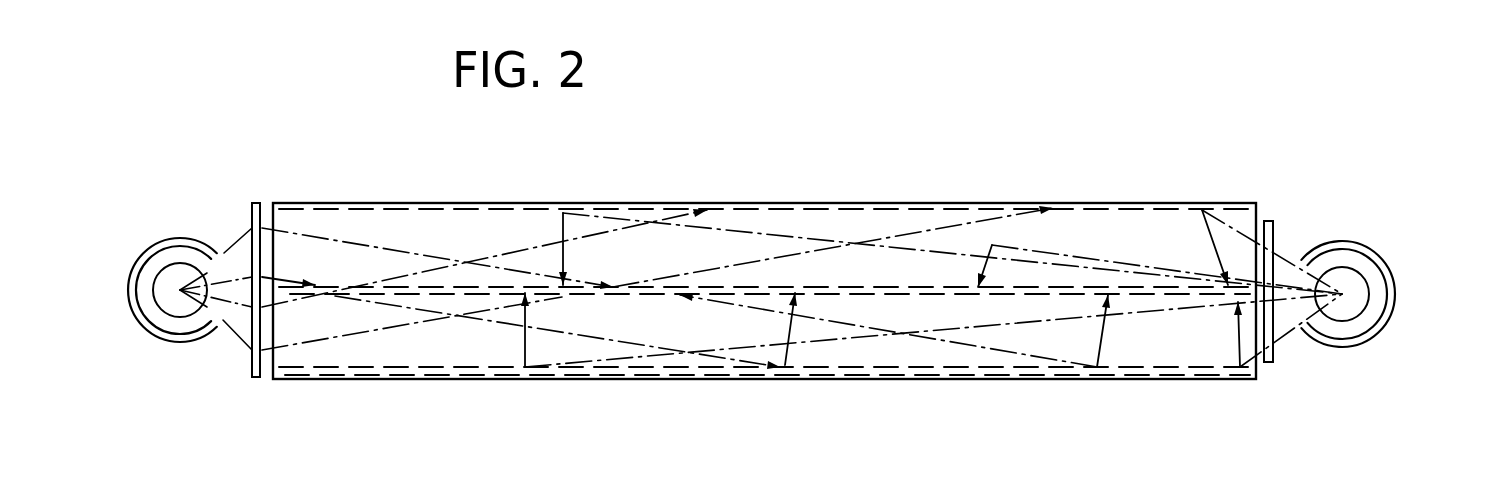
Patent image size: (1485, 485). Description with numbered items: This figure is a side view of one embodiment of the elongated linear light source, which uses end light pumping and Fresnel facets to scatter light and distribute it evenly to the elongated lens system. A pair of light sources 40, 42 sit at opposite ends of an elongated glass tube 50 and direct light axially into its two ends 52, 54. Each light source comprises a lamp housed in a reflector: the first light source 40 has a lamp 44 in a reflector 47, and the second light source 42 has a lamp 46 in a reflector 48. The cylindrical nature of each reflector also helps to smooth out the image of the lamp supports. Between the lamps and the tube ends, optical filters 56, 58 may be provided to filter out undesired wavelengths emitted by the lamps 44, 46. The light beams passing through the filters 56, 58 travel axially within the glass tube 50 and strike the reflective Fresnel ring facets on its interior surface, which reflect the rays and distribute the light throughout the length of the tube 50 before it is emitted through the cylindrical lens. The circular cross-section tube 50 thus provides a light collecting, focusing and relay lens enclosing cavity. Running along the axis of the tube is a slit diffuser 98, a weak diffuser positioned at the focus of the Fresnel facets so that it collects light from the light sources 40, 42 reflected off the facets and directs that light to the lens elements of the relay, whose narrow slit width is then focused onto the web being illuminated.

The light source 40 is at (149, 270).
The light source 42 is at (1388, 274).
The lamp 44 is at (170, 313).
The lamp 46 is at (1370, 302).
The reflector 47 is at (132, 310).
The reflector 48 is at (1395, 280).
The elongated glass tube 50 is at (940, 167).
The end of tube 52 is at (273, 212).
The end of tube 54 is at (1260, 213).
The optical filter 56 is at (233, 363).
The optical filter 58 is at (1283, 370).
The slit diffuser 98 is at (842, 293).